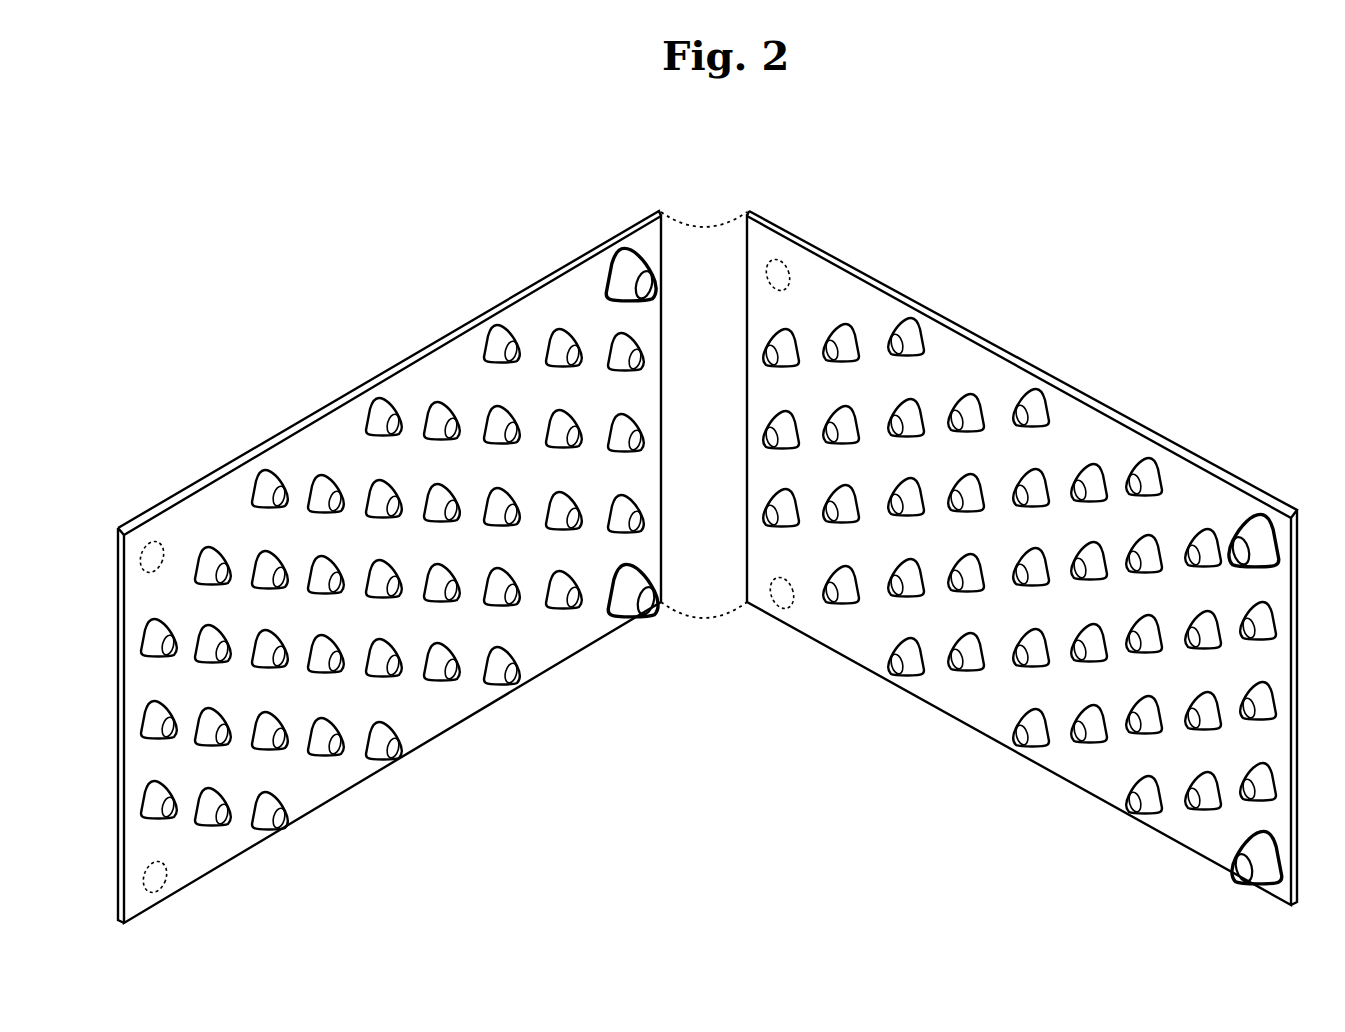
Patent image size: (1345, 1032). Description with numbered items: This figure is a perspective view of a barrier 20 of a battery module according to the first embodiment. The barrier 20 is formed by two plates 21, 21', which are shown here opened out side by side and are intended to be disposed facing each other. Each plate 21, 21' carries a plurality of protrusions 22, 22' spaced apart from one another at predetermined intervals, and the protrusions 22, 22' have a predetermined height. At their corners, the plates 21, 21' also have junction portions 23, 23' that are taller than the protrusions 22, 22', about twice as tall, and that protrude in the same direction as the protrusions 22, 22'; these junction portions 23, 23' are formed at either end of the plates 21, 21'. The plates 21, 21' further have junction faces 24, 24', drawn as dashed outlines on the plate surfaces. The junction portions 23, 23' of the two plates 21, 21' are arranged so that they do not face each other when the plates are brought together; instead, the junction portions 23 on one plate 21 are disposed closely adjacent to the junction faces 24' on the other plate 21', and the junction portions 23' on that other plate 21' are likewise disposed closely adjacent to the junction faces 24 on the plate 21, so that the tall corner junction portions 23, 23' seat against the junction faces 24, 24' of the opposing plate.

The barrier 20 is at (716, 140).
The plate 21 is at (389, 567).
The plate 21' is at (1022, 558).
The protrusions 22 is at (392, 539).
The protrusions 22' is at (1019, 528).
The junction portions 23 is at (619, 406).
The junction portions 23' is at (1268, 672).
The junction faces 24 is at (135, 682).
The junction faces 24' is at (794, 396).